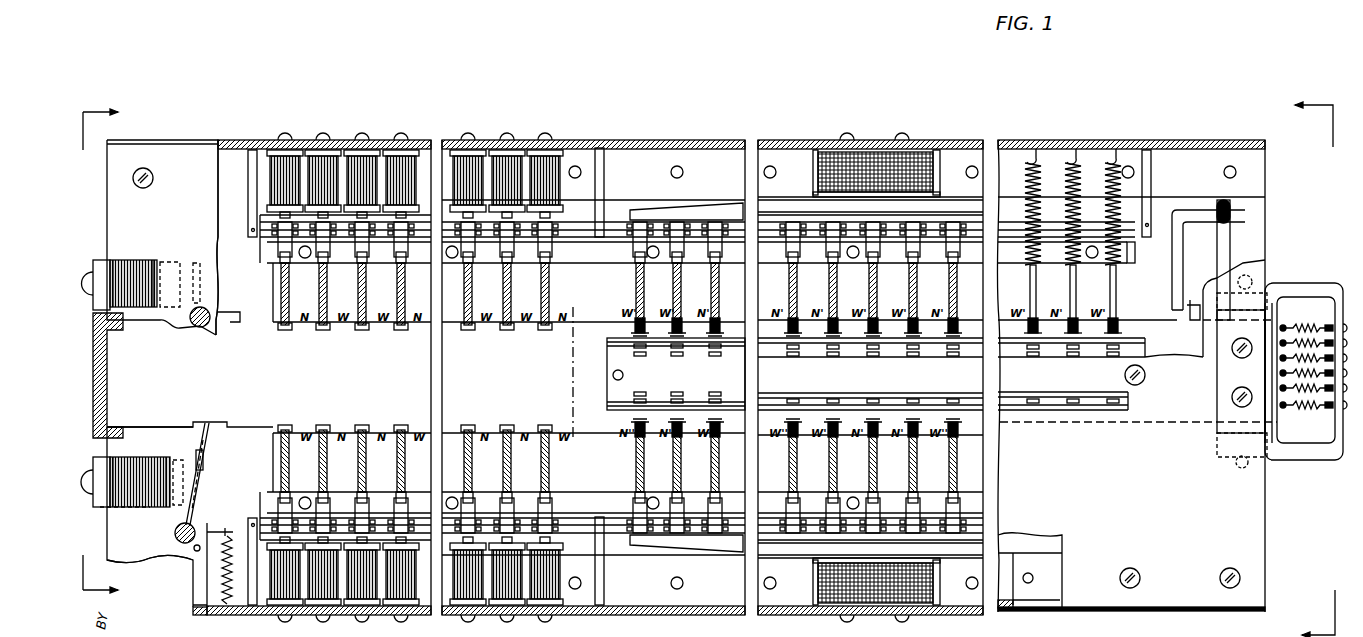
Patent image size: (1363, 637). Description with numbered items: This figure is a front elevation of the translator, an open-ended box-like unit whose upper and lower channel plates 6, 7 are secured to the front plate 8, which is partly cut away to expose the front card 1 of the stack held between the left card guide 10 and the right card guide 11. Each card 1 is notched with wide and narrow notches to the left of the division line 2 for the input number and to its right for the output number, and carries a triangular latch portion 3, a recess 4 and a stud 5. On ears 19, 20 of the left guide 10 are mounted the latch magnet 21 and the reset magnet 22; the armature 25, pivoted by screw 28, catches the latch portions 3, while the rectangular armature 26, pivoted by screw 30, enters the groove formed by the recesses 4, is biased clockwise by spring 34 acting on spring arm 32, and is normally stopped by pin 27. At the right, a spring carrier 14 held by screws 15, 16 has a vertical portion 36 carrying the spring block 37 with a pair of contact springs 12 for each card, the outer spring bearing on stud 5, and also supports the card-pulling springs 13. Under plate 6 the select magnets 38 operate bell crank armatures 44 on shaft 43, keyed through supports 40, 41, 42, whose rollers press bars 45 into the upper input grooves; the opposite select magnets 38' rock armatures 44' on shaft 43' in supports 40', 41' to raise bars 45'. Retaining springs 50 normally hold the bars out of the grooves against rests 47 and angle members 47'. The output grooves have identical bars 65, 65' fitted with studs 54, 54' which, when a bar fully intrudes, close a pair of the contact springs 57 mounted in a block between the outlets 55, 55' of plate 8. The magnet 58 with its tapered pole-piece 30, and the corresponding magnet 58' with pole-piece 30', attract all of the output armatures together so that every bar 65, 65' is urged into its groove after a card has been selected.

The card 1 is at (165, 427).
The division line 2 is at (588, 313).
The latch portion 3 is at (789, 364).
The rectangular recess 4 is at (201, 474).
The rectangular stud 5 is at (1190, 318).
The upper channel plate 6 is at (610, 140).
The lower channel plate 7 is at (810, 612).
The front plate 8 is at (218, 240).
The left card guide 10 is at (93, 355).
The right card guide 11 is at (1270, 445).
The contact springs 12 is at (1175, 286).
The card-pulling springs 13 is at (1310, 325).
The spring carrier 14 is at (1310, 290).
The holding screw 15 is at (1258, 282).
The holding screw 16 is at (1240, 465).
The supporting ear 19 is at (100, 300).
The supporting ear 20 is at (100, 460).
The latch magnet 21 is at (133, 262).
The reset magnet 22 is at (138, 458).
The armature of latch magnet 25 is at (233, 312).
The armature of reset magnet 26 is at (203, 488).
The pin 27 is at (205, 460).
The screw 28 is at (201, 328).
The pole-piece / screw 30 is at (561, 353).
The pole-piece 30' is at (870, 558).
The spring arm 32 is at (221, 530).
The spring 34 is at (215, 570).
The vertical rectangular portion 36 is at (1230, 248).
The spring block 37 is at (1250, 222).
The select magnets 38 is at (349, 158).
The select magnets 38' is at (348, 587).
The support 40 is at (222, 193).
The support 40' is at (247, 551).
The support 41 is at (615, 192).
The support 41' is at (602, 549).
The support 42 is at (1150, 185).
The shaft 43 is at (593, 219).
The shaft 43' is at (593, 532).
The bell crank armature 44 is at (324, 289).
The bell crank armature 44' is at (322, 479).
The bar 45 is at (272, 289).
The bar 45' is at (264, 479).
The rest 47 is at (593, 269).
The angle member 47' is at (593, 480).
The retaining spring 50 is at (1118, 170).
The stud 54 is at (721, 363).
The stud 54' is at (700, 388).
The rectangular outlet 55 is at (1085, 344).
The rectangular outlet 55' is at (1081, 399).
The paired contact springs 57 is at (620, 400).
The magnet 58 is at (895, 145).
The magnet 58' is at (887, 597).
The bar 65 is at (722, 279).
The bar 65' is at (723, 476).